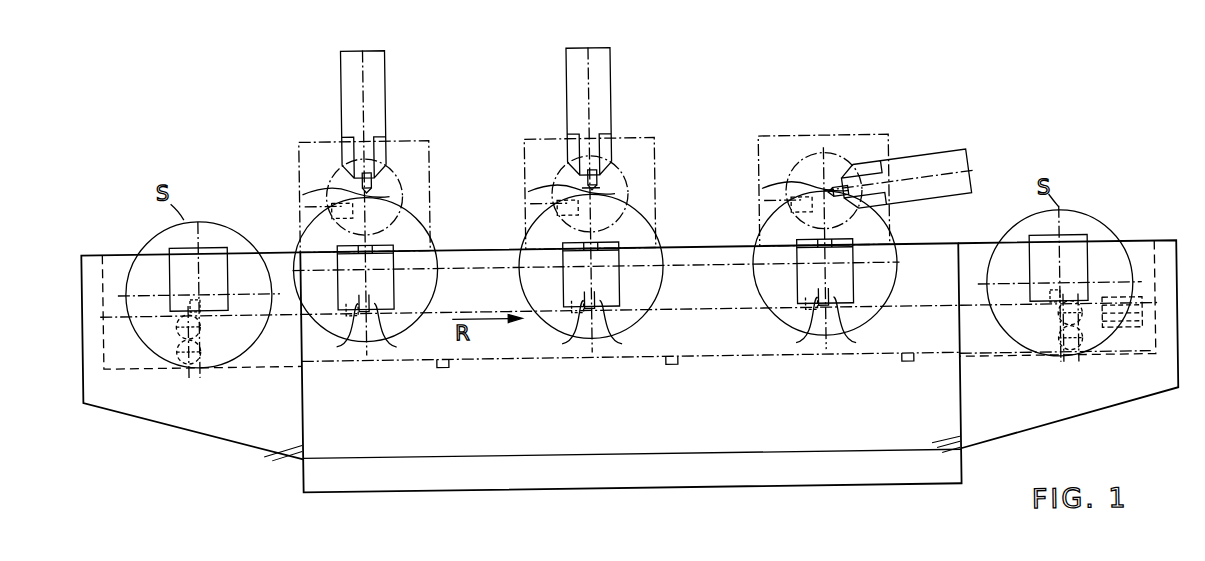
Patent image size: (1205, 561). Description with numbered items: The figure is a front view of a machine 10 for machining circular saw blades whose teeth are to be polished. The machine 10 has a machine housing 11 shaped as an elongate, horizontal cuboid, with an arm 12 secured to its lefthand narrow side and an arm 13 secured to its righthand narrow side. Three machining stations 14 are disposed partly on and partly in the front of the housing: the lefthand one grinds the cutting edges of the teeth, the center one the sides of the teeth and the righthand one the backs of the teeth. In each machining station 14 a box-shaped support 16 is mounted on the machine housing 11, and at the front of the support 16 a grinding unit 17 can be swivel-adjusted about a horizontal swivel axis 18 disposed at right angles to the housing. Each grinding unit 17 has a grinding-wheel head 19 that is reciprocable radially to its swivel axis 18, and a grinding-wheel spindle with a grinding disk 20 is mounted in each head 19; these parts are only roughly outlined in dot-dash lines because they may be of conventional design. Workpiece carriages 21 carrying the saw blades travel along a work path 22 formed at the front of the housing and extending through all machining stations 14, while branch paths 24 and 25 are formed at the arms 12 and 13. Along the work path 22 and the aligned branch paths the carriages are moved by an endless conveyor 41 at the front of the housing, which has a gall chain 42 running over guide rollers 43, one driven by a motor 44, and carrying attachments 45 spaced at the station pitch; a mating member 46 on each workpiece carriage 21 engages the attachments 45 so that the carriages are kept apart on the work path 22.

The machine 10 is at (201, 162).
The machine housing 11 is at (540, 463).
The arm 12 is at (160, 412).
The arm 13 is at (1062, 414).
The machining station 14 is at (426, 98).
The box-shaped support 16 is at (312, 162).
The grinding unit 17 is at (406, 190).
The swivel axis 18 is at (335, 191).
The grinding-wheel head 19 is at (346, 96).
The grinding disk 20 is at (379, 167).
The workpiece carriage 21 is at (172, 243).
The work path 22 is at (710, 308).
The branch path 24 is at (240, 326).
The branch path 25 is at (1016, 316).
The endless conveyor 41 is at (1117, 338).
The gall chain 42 is at (756, 360).
The guide roller 43 is at (180, 318).
The motor 44 is at (1130, 337).
The attachment 45 is at (909, 385).
The mating member 46 is at (633, 330).